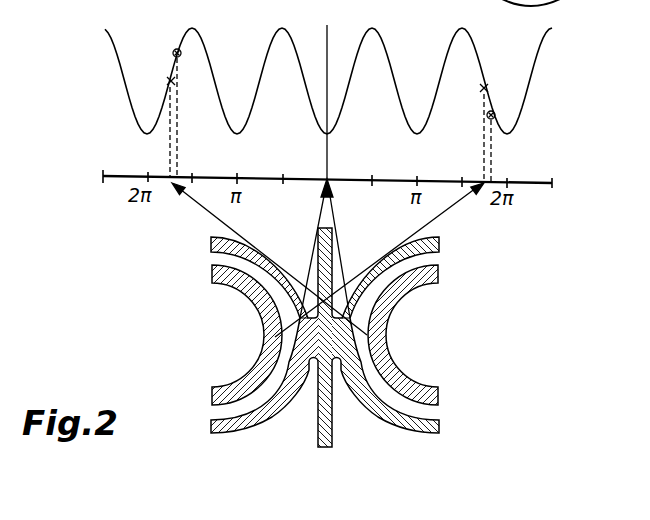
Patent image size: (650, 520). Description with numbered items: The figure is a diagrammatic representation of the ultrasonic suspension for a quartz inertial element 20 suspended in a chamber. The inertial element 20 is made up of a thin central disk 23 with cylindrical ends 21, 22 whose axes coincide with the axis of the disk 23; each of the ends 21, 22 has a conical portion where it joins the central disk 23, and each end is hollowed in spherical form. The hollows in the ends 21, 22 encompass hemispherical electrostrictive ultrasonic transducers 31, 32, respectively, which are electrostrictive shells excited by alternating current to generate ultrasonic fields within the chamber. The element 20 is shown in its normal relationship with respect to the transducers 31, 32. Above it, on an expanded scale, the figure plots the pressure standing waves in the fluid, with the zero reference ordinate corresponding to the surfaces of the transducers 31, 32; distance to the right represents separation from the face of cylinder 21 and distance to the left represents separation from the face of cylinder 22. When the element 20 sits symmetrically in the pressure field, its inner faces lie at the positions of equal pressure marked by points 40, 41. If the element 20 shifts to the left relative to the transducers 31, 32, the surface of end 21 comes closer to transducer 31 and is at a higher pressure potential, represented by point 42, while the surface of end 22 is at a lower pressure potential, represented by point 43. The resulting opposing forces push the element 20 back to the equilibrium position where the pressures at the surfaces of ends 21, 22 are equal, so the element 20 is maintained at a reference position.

The quartz inertial element 20 is at (300, 248).
The cylindrical end 21 is at (260, 422).
The cylindrical end 22 is at (388, 425).
The thin central disk 23 is at (324, 448).
The hemispherical electrostrictive ultrasonic transducer 31 is at (250, 380).
The hemispherical electrostrictive ultrasonic transducer 32 is at (399, 381).
The point of equal pressure 40 is at (168, 84).
The point of equal pressure 41 is at (489, 86).
The higher pressure potential point 42 is at (173, 55).
The lower pressure potential point 43 is at (494, 113).